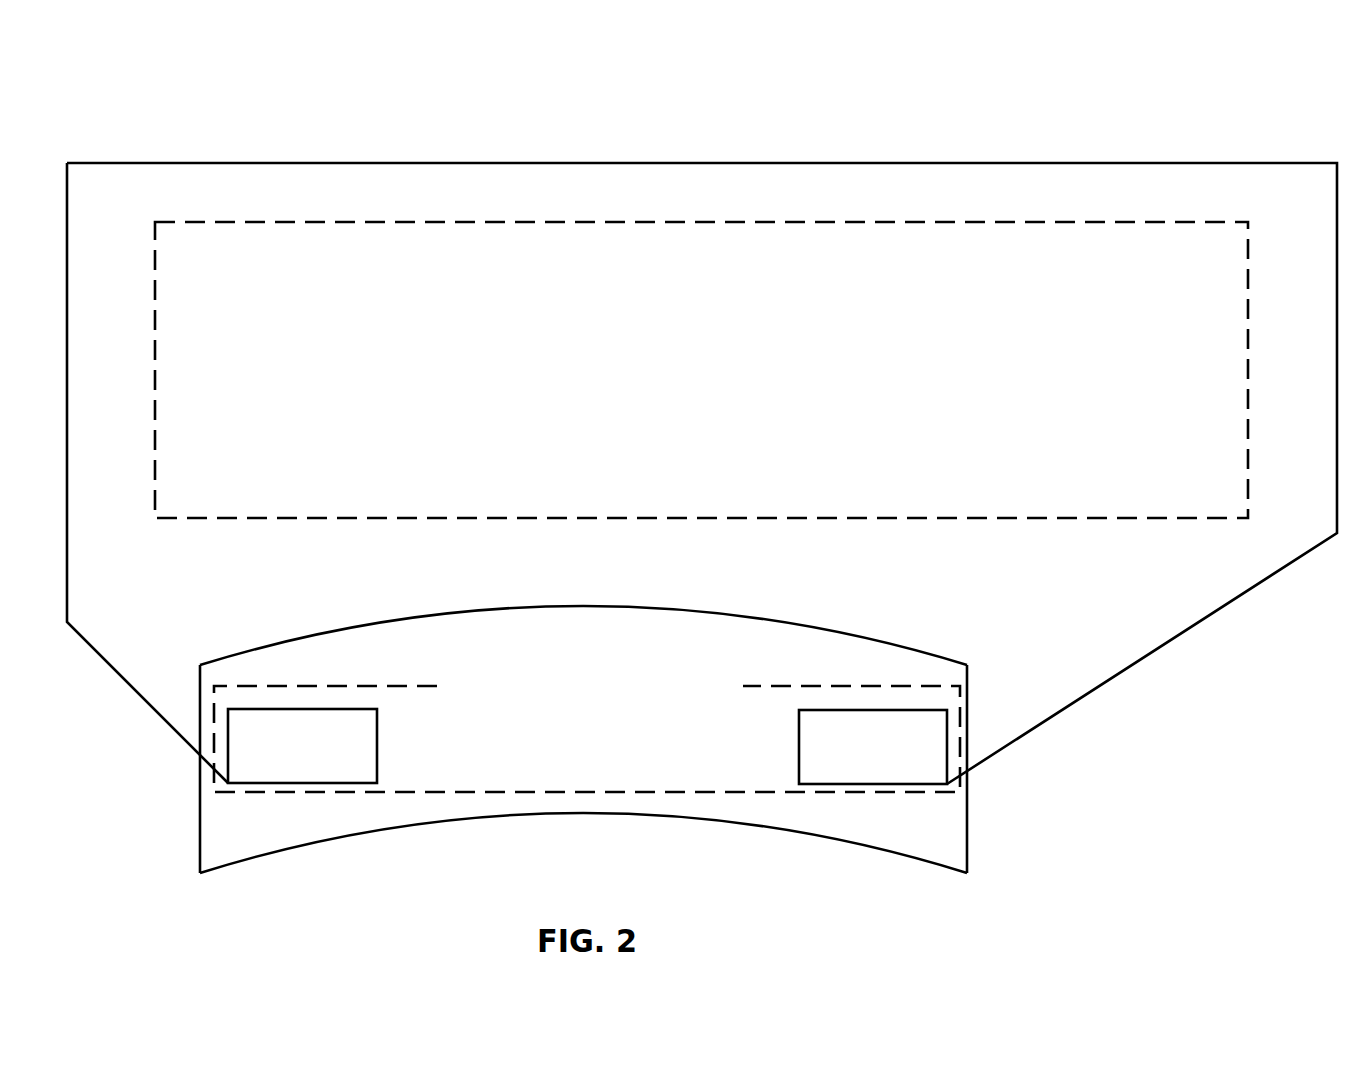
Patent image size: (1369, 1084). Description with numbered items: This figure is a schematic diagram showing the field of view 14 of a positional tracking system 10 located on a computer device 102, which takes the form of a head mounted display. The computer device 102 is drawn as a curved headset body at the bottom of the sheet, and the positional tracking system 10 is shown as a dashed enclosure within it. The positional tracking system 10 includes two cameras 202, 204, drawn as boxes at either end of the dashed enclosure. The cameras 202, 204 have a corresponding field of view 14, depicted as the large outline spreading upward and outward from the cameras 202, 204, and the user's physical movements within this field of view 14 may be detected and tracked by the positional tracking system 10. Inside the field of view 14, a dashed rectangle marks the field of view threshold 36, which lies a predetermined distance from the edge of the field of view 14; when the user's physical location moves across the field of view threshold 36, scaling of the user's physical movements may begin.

The field of view 14 is at (1337, 113).
The field of view threshold 36 is at (355, 220).
The computer device 102 is at (298, 845).
The positional tracking system 10 is at (729, 695).
The camera 202 is at (358, 759).
The camera 204 is at (929, 759).